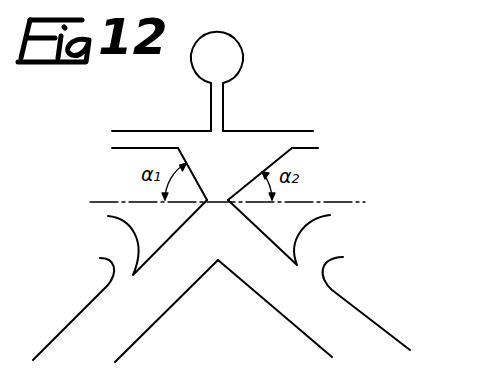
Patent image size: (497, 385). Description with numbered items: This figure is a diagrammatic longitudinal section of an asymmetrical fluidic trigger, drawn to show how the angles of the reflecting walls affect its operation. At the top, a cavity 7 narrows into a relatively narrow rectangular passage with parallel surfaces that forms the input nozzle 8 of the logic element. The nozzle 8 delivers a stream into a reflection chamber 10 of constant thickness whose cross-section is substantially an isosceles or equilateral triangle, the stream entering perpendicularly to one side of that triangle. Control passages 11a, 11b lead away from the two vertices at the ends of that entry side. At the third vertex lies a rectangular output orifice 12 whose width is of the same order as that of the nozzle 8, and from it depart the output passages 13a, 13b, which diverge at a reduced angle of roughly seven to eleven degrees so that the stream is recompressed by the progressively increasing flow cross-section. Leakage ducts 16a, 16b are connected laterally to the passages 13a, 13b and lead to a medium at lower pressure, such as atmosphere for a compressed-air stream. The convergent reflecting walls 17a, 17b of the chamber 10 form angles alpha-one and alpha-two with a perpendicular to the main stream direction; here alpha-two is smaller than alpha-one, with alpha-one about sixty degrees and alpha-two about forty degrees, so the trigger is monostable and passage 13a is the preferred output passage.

The cavity 7 is at (230, 52).
The input nozzle 8 is at (218, 113).
The reflection chamber 10 is at (215, 157).
The control passage 11a is at (138, 135).
The control passage 11b is at (305, 135).
The output orifice 12 is at (218, 203).
The output passage 13a is at (173, 287).
The output passage 13b is at (295, 300).
The leakage duct 16a is at (120, 245).
The leakage duct 16b is at (323, 237).
The reflecting wall 17a is at (195, 187).
The reflecting wall 17b is at (257, 193).